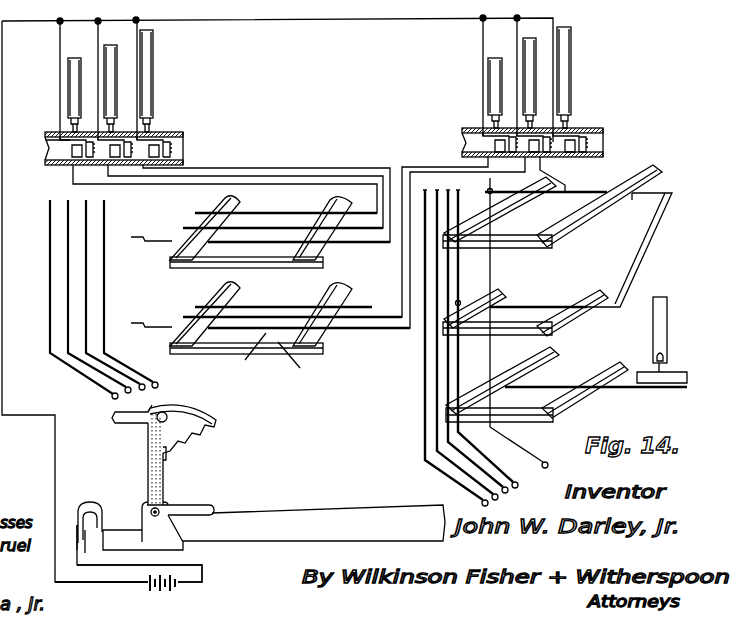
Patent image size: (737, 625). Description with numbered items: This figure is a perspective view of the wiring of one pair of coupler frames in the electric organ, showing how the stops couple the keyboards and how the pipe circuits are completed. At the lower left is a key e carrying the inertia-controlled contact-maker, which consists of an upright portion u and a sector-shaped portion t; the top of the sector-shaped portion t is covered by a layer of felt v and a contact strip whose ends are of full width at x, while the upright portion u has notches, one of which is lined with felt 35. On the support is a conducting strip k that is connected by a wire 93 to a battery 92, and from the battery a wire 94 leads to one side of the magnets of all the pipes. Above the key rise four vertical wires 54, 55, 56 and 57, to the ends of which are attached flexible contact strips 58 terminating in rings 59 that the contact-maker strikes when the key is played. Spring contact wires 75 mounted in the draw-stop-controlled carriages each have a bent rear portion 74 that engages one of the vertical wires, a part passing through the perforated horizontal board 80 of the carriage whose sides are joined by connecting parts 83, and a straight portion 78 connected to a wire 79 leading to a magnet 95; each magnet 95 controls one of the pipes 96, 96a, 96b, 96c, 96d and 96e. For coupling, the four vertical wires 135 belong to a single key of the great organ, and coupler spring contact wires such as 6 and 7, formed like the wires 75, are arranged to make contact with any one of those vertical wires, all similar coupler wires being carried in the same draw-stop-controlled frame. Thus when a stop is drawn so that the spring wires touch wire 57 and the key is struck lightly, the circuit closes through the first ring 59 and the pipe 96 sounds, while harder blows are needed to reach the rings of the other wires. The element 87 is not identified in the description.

The pipe 96e is at (68, 90).
The pipe 96d is at (110, 95).
The pipe 96c is at (153, 97).
The pipe 96b is at (487, 68).
The pipe 96a is at (529, 68).
The pipe 96 is at (570, 92).
The magnet 95 is at (568, 160).
The spring contact wire 75 is at (170, 246).
The horizontal board 80 is at (236, 300).
The contact rail 87 is at (343, 293).
The wire 79 is at (366, 330).
The straight portion 78 is at (610, 378).
The connecting part 83 is at (302, 367).
The vertical wire 54 is at (50, 257).
The vertical wire 55 is at (68, 277).
The vertical wire 56 is at (86, 297).
The vertical wire 57 is at (104, 312).
The contact strip 58 is at (90, 377).
The ring 59 is at (113, 397).
The vertical wires 135 is at (440, 357).
The bent rear portion 74 is at (493, 196).
The felt lining 35 is at (166, 456).
The wire 93 is at (204, 576).
The wire 94 is at (124, 584).
The battery 92 is at (172, 588).
The upright portion u is at (216, 418).
The full-width end of contact strip x is at (165, 410).
The layer of felt v is at (140, 392).
The sector-shaped portion t is at (130, 424).
The key e is at (380, 510).
The conducting strip k is at (89, 534).
The spring contact wire 7 is at (611, 250).
The spring contact wire 6 is at (543, 295).